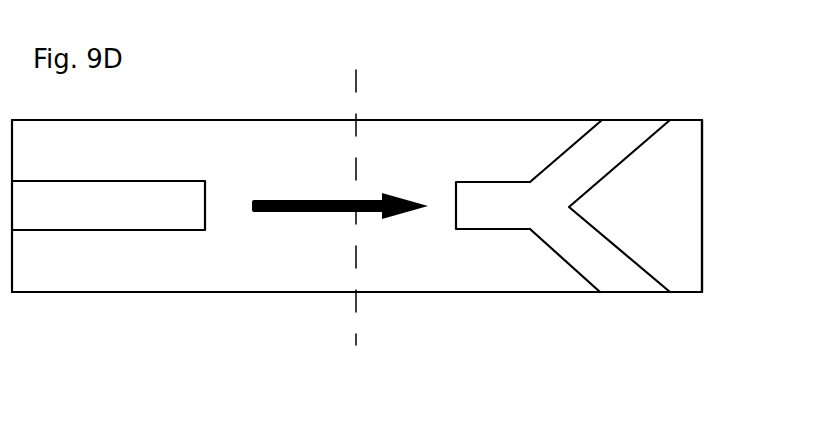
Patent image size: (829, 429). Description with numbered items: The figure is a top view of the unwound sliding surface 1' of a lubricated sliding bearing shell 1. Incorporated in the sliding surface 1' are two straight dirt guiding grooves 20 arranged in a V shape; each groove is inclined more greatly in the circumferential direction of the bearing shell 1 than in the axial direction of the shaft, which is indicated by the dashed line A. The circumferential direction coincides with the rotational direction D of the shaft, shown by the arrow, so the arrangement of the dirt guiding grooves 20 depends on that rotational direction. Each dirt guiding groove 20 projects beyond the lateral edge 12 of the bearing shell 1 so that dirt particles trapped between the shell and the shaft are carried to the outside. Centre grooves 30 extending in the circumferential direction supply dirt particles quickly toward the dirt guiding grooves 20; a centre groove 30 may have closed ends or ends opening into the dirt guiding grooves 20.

The bearing shell 1 is at (357, 244).
The sliding surface 1' is at (694, 206).
The lateral edge 12 is at (433, 140).
The dirt guiding grooves 20 is at (608, 148).
The centre groove 30 is at (141, 207).
The axial direction A is at (358, 193).
The rotational direction D is at (340, 216).